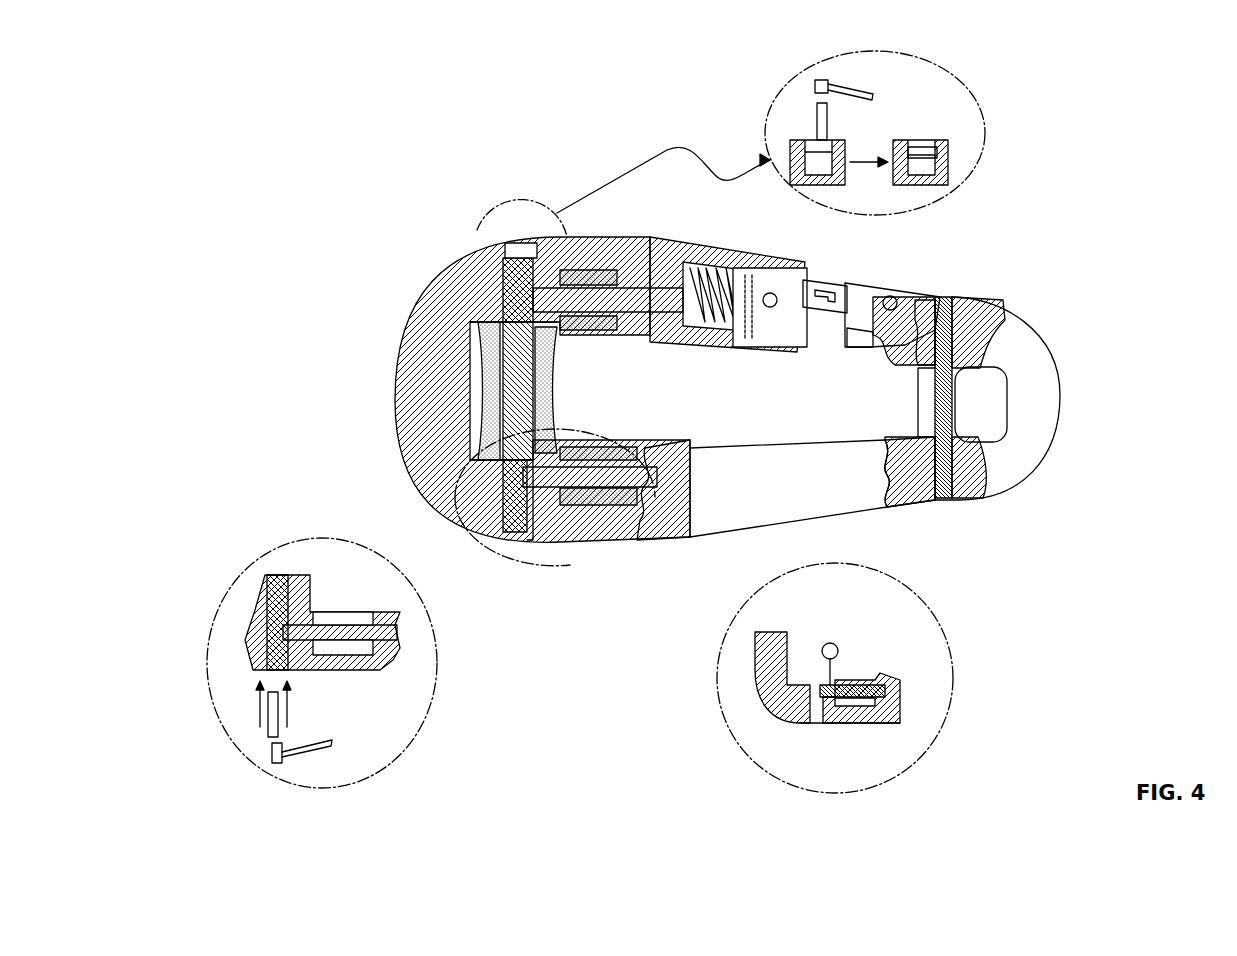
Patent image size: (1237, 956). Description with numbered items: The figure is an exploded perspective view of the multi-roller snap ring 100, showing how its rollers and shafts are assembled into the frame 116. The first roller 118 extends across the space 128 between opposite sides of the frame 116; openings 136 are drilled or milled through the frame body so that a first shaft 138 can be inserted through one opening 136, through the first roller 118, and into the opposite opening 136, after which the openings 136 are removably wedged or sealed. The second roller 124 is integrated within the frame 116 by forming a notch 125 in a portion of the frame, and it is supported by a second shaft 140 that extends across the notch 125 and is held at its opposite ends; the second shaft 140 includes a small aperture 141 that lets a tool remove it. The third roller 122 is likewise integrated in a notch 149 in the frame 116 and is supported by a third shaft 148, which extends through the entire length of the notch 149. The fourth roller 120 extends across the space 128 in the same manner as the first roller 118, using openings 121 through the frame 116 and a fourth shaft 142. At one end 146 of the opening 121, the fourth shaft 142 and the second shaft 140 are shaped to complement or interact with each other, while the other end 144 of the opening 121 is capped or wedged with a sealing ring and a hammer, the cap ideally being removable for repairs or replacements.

The multi-roller snap ring 100 is at (503, 160).
The frame 116 is at (1008, 468).
The first roller 118 is at (962, 425).
The fourth roller 120 is at (407, 322).
The openings 121 is at (513, 242).
The third roller 122 is at (480, 243).
The second roller 124 is at (493, 417).
The notch 125 is at (600, 513).
The space 128 is at (828, 387).
The openings 136 is at (950, 297).
The first shaft 138 is at (952, 390).
The second shaft 140 is at (640, 443).
The small aperture 141 is at (597, 450).
The fourth shaft 142 is at (945, 150).
The end of the opening 144 is at (771, 133).
The end of the opening 146 is at (322, 663).
The third shaft 148 is at (613, 335).
The notch 149 is at (603, 243).